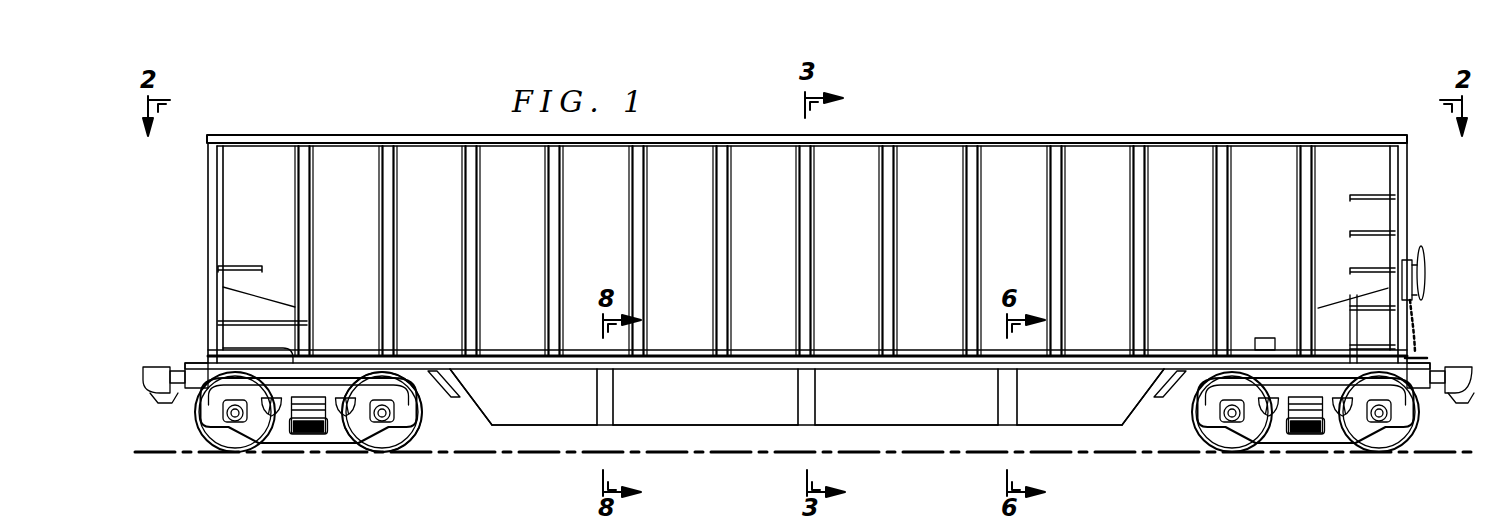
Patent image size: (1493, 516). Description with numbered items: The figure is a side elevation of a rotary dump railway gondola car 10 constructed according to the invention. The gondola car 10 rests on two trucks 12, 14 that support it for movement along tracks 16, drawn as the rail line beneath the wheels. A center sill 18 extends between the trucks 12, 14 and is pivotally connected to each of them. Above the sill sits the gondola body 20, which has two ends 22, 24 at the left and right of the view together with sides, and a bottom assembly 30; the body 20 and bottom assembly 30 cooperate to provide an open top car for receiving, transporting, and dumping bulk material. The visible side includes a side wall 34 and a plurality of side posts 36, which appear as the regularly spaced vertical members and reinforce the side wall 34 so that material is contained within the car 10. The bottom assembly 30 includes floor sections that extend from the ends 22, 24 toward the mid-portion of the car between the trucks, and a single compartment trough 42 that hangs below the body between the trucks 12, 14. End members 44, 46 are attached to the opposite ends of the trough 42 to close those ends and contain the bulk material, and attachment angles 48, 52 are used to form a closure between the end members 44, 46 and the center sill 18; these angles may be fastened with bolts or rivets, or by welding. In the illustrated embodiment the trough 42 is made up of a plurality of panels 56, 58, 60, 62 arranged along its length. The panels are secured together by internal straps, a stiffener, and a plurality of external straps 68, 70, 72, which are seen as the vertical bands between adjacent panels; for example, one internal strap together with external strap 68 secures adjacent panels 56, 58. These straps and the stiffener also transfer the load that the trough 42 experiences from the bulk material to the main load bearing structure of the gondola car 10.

The railway gondola car 10 is at (350, 98).
The truck 12 is at (196, 422).
The truck 14 is at (1414, 422).
The tracks 16 is at (406, 450).
The center sill 18 is at (192, 363).
The gondola body 20 is at (250, 128).
The end 22 is at (208, 195).
The end 24 is at (1407, 195).
The bottom assembly 30 is at (1094, 432).
The side wall 34 is at (1030, 232).
The side posts 36 is at (377, 192).
The single compartment trough 42 is at (520, 438).
The end member 44 is at (470, 420).
The end member 46 is at (1140, 420).
The attachment angle 48 is at (448, 390).
The attachment angle 52 is at (1165, 390).
The panel 56 is at (574, 428).
The panel 58 is at (712, 428).
The panel 60 is at (904, 428).
The panel 62 is at (1058, 428).
The external strap 68 is at (617, 385).
The external strap 70 is at (798, 385).
The external strap 72 is at (998, 385).